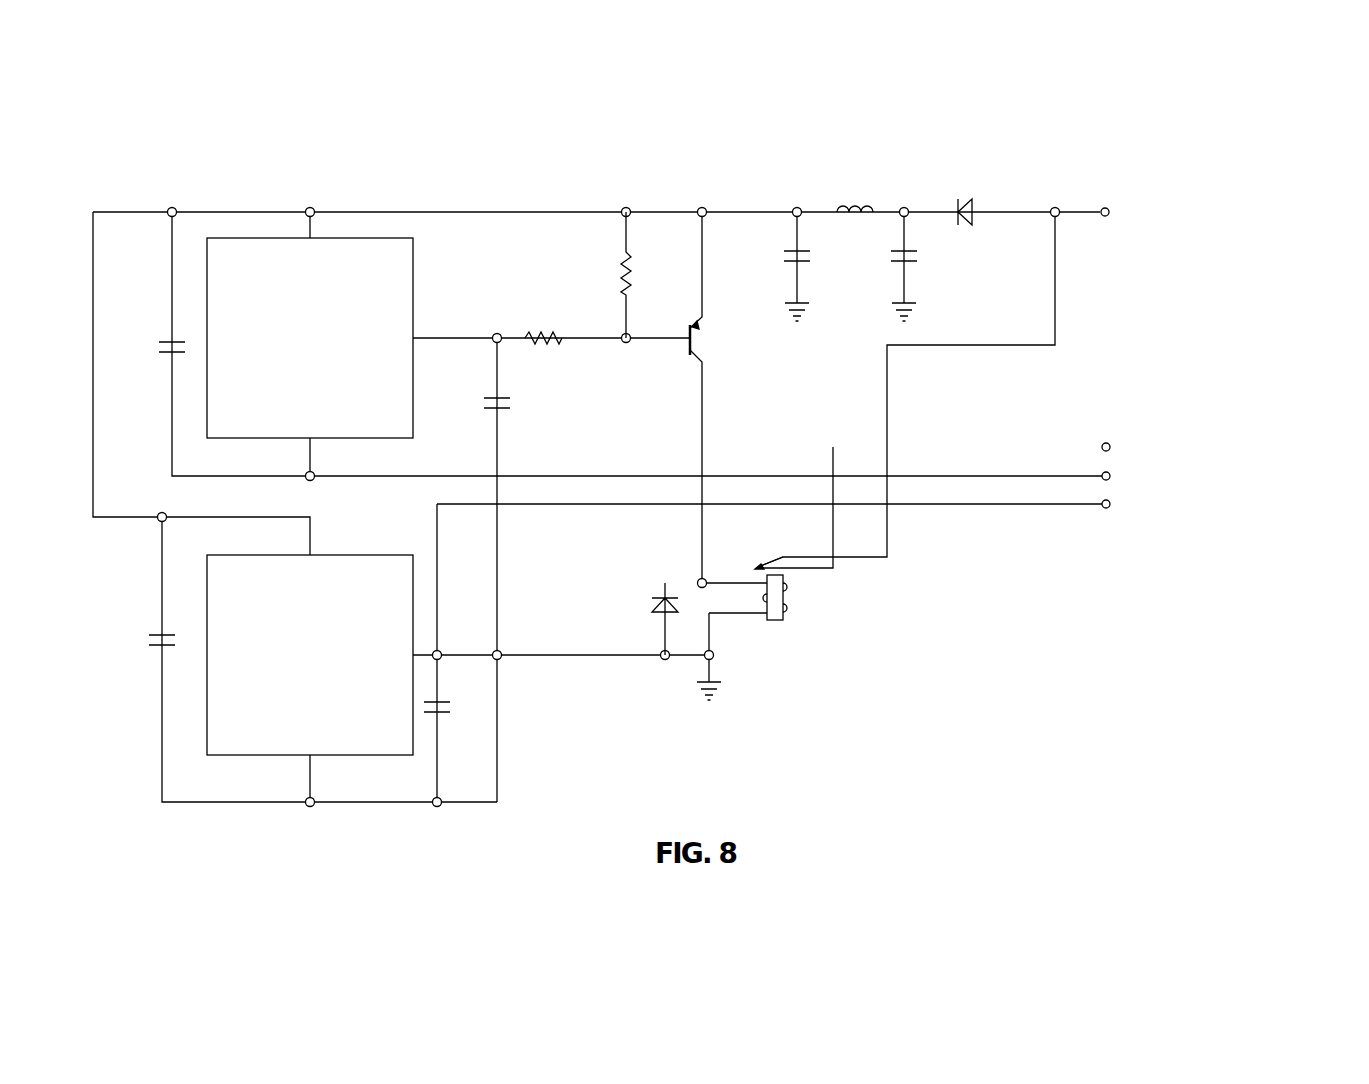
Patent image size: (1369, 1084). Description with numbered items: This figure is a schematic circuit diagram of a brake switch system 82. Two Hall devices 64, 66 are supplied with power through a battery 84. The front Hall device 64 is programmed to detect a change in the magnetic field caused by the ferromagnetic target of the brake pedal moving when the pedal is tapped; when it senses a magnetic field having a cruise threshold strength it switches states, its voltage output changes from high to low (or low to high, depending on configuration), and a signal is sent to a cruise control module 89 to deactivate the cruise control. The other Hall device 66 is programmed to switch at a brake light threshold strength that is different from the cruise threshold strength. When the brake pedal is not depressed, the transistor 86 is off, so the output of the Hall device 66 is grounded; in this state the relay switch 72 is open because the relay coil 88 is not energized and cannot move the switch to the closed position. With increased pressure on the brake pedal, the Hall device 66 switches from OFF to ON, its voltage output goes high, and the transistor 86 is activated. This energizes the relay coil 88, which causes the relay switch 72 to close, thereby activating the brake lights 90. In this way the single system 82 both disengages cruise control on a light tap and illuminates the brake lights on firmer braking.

The brake switch system 82 is at (157, 170).
The battery 84 is at (1107, 217).
The transistor 86 is at (683, 341).
The relay coil 88 is at (778, 620).
The relay switch 72 is at (808, 573).
The brake lights 90 is at (1228, 382).
The cruise control module 89 is at (1228, 547).
The Hall device 66 is at (310, 325).
The Hall device 64 is at (310, 642).